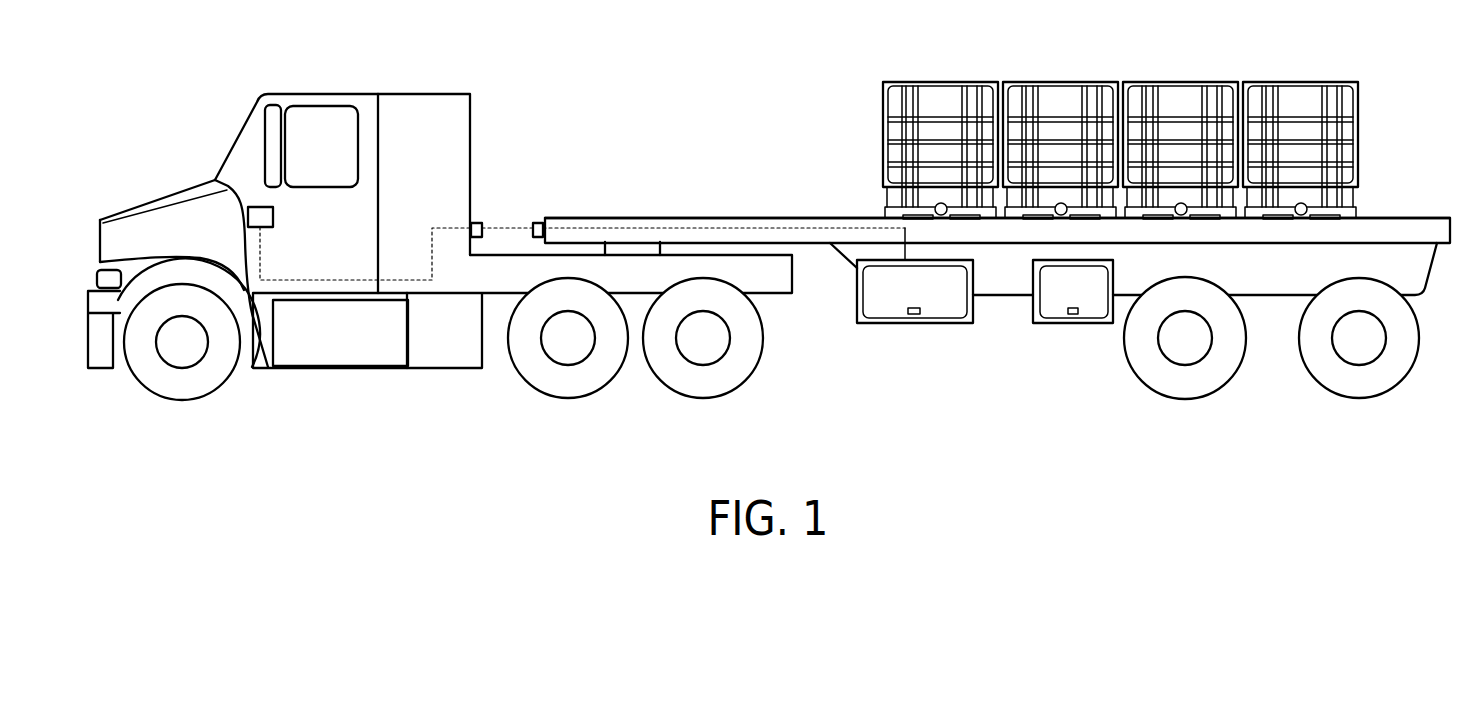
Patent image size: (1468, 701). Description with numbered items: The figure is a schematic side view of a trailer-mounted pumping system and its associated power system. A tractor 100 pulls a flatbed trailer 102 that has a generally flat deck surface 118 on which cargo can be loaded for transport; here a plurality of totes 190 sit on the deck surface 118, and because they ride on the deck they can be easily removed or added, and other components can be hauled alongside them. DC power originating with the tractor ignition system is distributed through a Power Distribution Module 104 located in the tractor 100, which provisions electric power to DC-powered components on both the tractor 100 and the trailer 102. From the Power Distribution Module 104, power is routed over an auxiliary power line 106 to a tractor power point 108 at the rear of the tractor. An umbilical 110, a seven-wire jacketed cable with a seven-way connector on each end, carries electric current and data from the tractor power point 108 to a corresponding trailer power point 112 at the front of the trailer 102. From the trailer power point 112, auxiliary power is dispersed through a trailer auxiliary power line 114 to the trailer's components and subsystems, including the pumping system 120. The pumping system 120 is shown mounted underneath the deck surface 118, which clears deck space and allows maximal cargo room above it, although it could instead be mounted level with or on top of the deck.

The tractor 100 is at (305, 96).
The trailer 102 is at (708, 218).
The Power Distribution Module 104 is at (273, 215).
The auxiliary power line 106 is at (400, 280).
The tractor power point 108 is at (477, 222).
The umbilical 110 is at (503, 228).
The trailer power point 112 is at (540, 222).
The trailer auxiliary power line 114 is at (602, 218).
The deck surface 118 is at (776, 218).
The pumping system 120 is at (943, 360).
The totes 190 is at (935, 95).